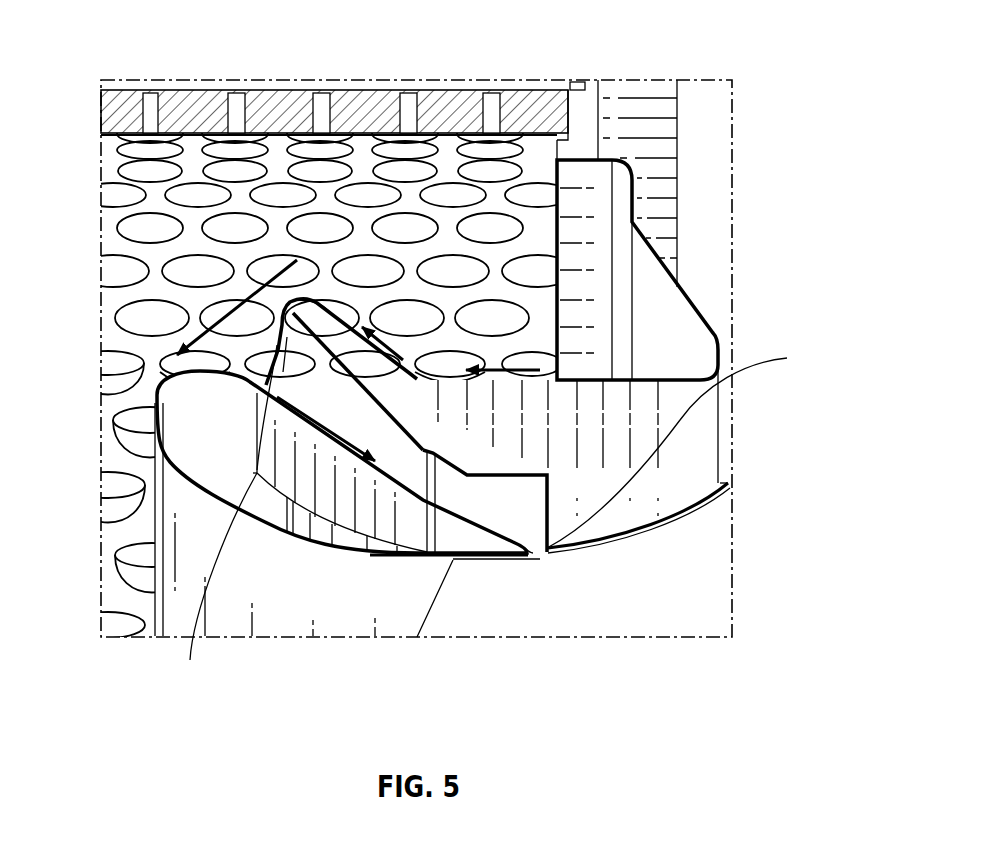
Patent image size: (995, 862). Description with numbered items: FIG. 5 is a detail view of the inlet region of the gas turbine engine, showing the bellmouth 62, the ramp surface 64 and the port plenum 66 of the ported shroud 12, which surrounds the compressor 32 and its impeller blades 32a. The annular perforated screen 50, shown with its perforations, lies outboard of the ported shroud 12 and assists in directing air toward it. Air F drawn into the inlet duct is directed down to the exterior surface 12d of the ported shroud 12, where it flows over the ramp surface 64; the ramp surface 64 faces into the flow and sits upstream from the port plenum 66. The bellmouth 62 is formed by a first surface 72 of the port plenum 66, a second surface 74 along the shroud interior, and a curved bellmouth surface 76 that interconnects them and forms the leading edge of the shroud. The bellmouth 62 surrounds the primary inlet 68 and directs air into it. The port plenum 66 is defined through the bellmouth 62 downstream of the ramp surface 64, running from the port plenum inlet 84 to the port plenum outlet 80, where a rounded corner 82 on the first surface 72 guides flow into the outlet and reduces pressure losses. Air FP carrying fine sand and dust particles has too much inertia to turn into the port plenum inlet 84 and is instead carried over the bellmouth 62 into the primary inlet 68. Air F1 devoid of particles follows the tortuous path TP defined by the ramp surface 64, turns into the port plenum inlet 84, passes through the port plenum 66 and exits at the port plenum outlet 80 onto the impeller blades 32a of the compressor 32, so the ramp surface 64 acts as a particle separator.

The ported shroud 12 is at (710, 318).
The exterior surface 12d is at (575, 378).
The compressor 32 is at (750, 515).
The impeller blades 32a is at (716, 600).
The perforated screen 50 is at (543, 137).
The bellmouth 62 is at (156, 384).
The ramp surface 64 is at (331, 293).
The port plenum 66 is at (632, 448).
The primary inlet 68 is at (393, 623).
The first surface 72 is at (420, 560).
The second surface 74 is at (297, 540).
The curved bellmouth surface 76 is at (157, 405).
The port plenum outlet 80 is at (533, 553).
The rounded corner 82 is at (560, 477).
The port plenum inlet 84 is at (285, 372).
The air with entrained fine sand and dust particles FP is at (247, 295).
The air flow F is at (500, 372).
The air devoid of fine sand and dust particles F1 is at (327, 420).
The tortuous path TP is at (257, 473).